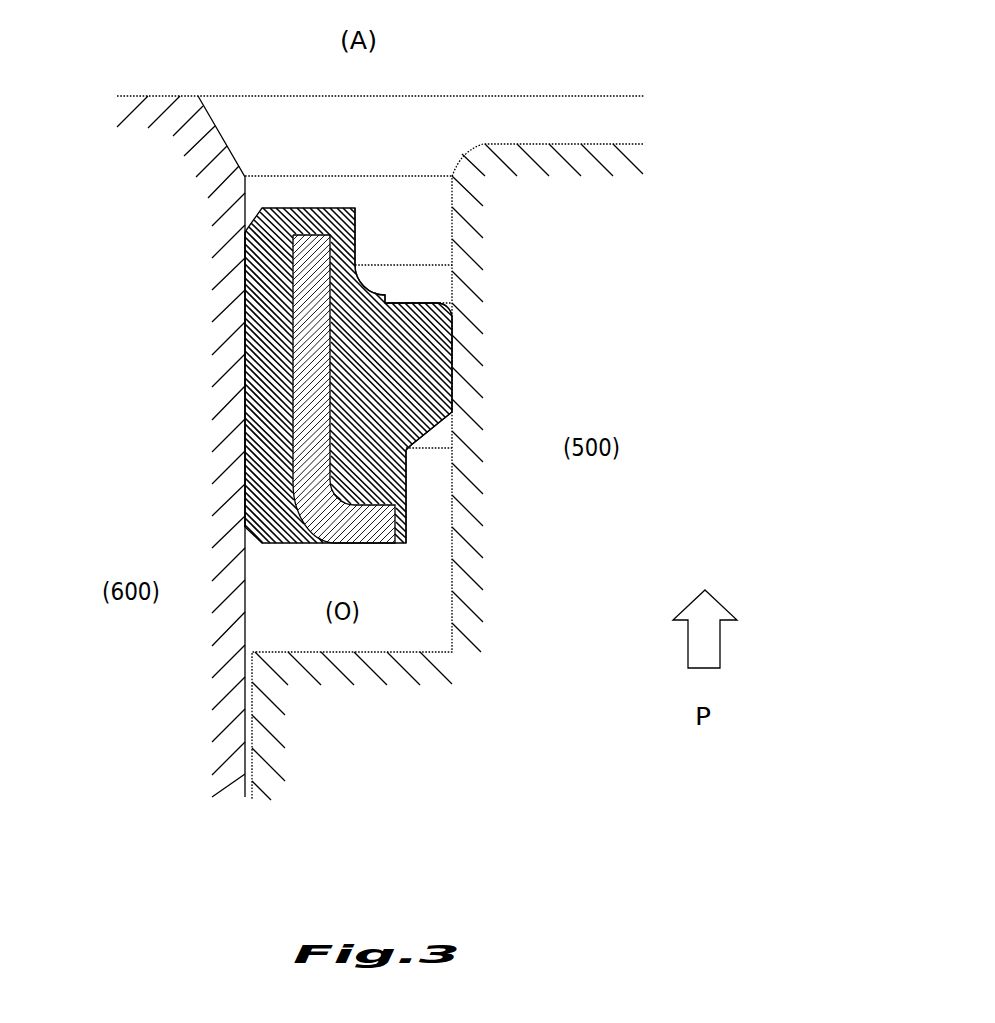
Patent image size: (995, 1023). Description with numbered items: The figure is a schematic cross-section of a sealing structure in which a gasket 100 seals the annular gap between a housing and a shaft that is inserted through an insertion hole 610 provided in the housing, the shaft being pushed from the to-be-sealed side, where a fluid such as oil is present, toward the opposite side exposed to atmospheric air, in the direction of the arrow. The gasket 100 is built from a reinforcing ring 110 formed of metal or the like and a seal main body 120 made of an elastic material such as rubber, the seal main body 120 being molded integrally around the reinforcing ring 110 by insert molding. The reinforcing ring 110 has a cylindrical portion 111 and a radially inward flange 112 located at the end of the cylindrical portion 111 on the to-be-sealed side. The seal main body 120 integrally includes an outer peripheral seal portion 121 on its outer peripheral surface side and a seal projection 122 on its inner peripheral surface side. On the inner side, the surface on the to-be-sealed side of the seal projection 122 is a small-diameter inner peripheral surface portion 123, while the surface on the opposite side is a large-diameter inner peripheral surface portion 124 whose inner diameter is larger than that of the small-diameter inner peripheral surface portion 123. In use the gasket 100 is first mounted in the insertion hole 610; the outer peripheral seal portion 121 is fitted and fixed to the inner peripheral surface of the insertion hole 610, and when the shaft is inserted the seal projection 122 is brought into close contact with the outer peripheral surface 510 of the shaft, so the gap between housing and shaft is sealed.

The gasket 100 is at (374, 141).
The reinforcing ring 110 is at (325, 438).
The cylindrical portion 111 is at (303, 318).
The radially inward flange 112 is at (373, 527).
The seal main body 120 is at (310, 184).
The outer peripheral seal portion 121 is at (250, 352).
The seal projection 122 is at (445, 352).
The small-diameter inner peripheral surface portion 123 is at (400, 495).
The large-diameter inner peripheral surface portion 124 is at (362, 233).
The outer peripheral surface 510 is at (452, 603).
The insertion hole 610 is at (247, 590).